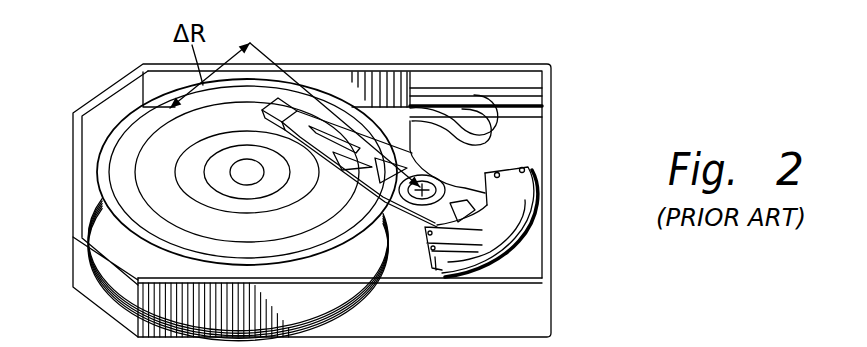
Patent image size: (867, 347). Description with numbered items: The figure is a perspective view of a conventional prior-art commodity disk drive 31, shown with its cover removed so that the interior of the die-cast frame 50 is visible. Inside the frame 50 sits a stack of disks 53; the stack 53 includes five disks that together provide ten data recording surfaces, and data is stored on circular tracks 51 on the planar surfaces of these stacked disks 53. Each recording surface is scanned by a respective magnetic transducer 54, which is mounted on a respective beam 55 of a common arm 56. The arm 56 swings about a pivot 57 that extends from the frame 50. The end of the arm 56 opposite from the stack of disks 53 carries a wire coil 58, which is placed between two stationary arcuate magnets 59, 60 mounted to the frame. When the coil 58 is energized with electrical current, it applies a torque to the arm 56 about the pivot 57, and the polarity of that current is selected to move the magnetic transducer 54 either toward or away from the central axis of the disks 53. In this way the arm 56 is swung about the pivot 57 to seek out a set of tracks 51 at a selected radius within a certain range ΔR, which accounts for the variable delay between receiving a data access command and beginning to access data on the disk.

The disk drive 31 is at (582, 38).
The die-cast frame 50 is at (516, 313).
The circular tracks 51 is at (162, 142).
The stacked disks 53 is at (125, 182).
The magnetic transducer 54 is at (262, 110).
The beam 55 is at (365, 170).
The arm 56 is at (413, 230).
The pivot 57 is at (414, 196).
The wire coil 58 is at (515, 236).
The stationary arcuate magnet 59 is at (520, 192).
The stationary arcuate magnet 60 is at (500, 255).